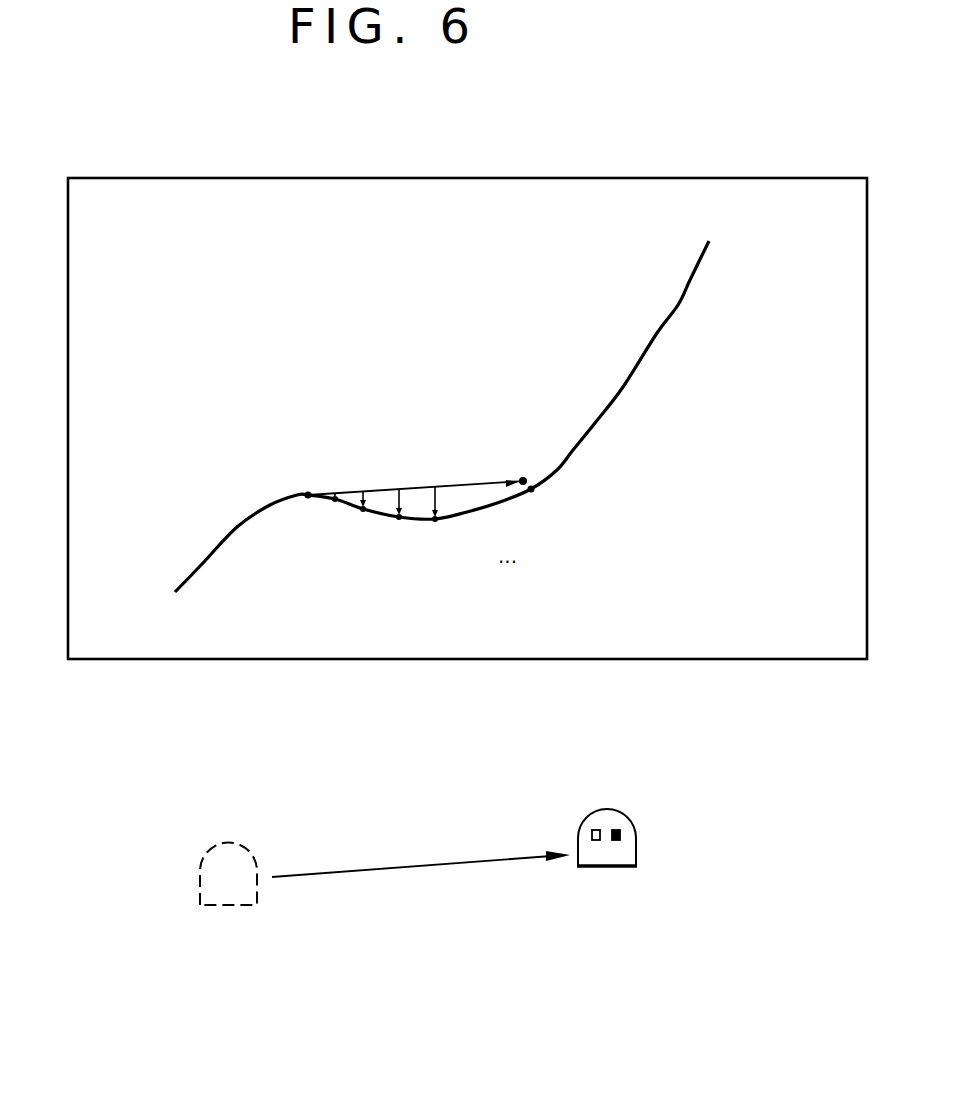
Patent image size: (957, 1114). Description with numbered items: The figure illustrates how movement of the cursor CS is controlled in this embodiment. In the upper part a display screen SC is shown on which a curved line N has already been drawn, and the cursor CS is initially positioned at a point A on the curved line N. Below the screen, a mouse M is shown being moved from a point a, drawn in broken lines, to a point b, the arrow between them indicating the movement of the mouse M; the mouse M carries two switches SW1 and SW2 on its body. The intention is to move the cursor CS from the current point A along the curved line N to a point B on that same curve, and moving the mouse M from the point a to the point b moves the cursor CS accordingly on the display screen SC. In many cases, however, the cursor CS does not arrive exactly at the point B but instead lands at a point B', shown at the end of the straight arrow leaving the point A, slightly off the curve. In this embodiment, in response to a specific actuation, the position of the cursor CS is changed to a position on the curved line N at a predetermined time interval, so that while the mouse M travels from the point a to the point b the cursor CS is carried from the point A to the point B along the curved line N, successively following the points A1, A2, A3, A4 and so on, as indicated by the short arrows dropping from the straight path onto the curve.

The display screen SC is at (789, 178).
The curved line N is at (682, 302).
The point A is at (305, 470).
The point B' is at (423, 457).
The point B is at (539, 535).
The cursor CS is at (305, 499).
The point A1 is at (328, 502).
The point A2 is at (360, 512).
The point A3 is at (400, 520).
The point A4 is at (437, 522).
The point a is at (228, 850).
The point b is at (602, 846).
The first mouse switch SW1 is at (591, 831).
The second mouse switch SW2 is at (621, 835).
The mouse M is at (605, 868).